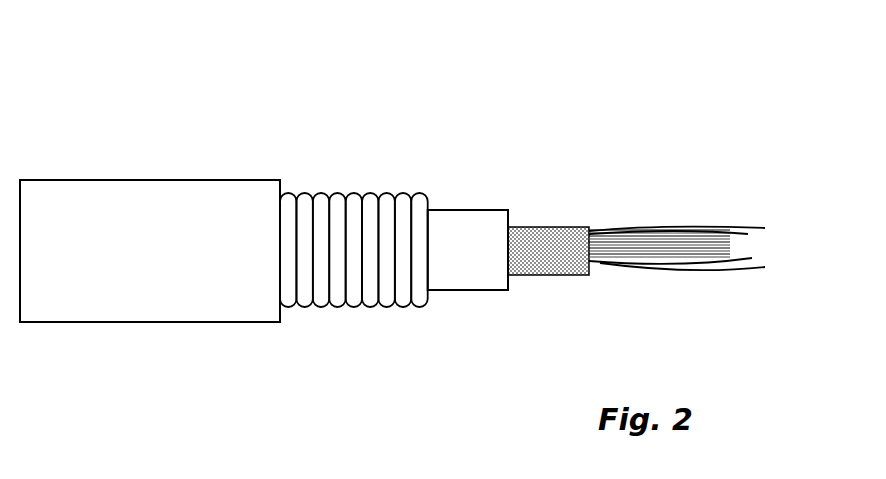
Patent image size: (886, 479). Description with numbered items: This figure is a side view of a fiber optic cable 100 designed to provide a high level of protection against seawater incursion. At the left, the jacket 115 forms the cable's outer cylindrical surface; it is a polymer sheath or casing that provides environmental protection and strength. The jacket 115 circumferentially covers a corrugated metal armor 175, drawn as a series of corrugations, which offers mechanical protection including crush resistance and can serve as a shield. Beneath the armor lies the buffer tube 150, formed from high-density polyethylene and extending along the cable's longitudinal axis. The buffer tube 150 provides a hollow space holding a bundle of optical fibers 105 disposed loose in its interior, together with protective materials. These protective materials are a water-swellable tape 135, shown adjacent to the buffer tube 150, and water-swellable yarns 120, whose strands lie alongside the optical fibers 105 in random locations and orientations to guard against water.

The fiber optic cable 100 is at (148, 74).
The jacket 115 is at (113, 322).
The corrugated metal armor 175 is at (386, 193).
The buffer tube 150 is at (478, 260).
The water-swellable tape 135 is at (533, 237).
The optical fibers 105 is at (672, 240).
The water-swellable yarns 120 is at (768, 250).